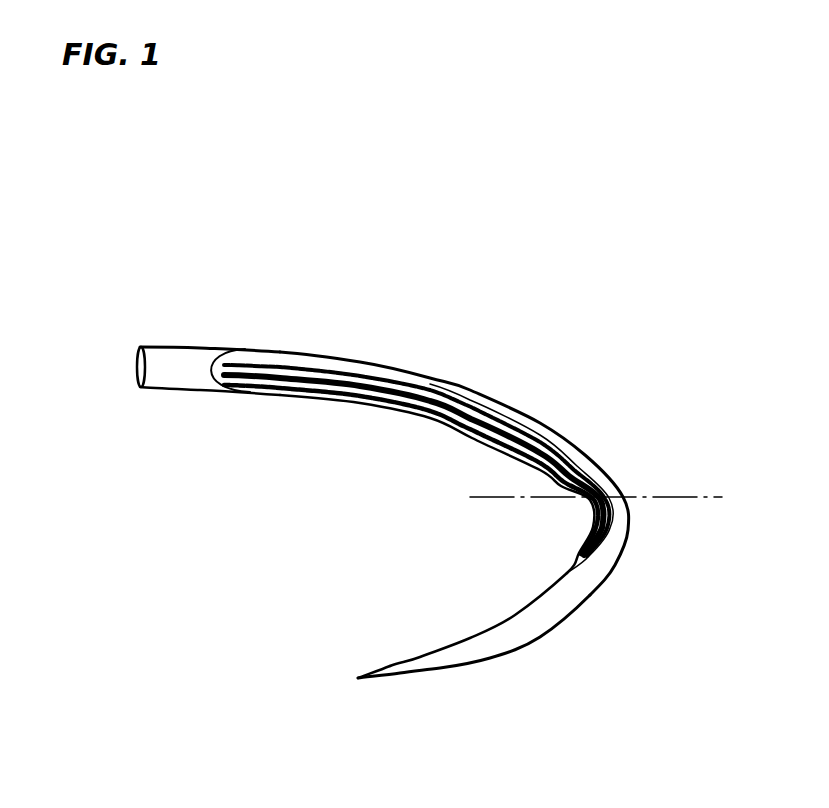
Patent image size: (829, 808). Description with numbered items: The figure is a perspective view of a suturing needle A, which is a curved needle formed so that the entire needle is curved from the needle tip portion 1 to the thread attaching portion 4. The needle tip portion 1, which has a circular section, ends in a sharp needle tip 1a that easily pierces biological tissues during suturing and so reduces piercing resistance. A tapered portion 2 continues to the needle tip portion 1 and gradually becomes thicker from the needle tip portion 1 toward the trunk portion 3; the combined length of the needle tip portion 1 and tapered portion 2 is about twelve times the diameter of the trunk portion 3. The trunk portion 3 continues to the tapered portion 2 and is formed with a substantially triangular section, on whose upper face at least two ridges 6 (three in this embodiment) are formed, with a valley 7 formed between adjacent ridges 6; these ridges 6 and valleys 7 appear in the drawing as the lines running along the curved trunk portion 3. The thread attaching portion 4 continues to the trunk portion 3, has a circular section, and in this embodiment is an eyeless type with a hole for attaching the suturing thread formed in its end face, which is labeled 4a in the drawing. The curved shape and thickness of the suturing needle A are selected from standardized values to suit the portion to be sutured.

The needle tip portion 1 is at (432, 640).
The needle tip 1a is at (358, 678).
The tapered portion 2 is at (532, 640).
The trunk portion 3 is at (594, 457).
The thread attaching portion 4 is at (192, 338).
The end face of tubular portion 4a is at (140, 372).
The ridges 6 is at (357, 368).
The valley 7 is at (313, 365).
The suturing needle A is at (529, 385).